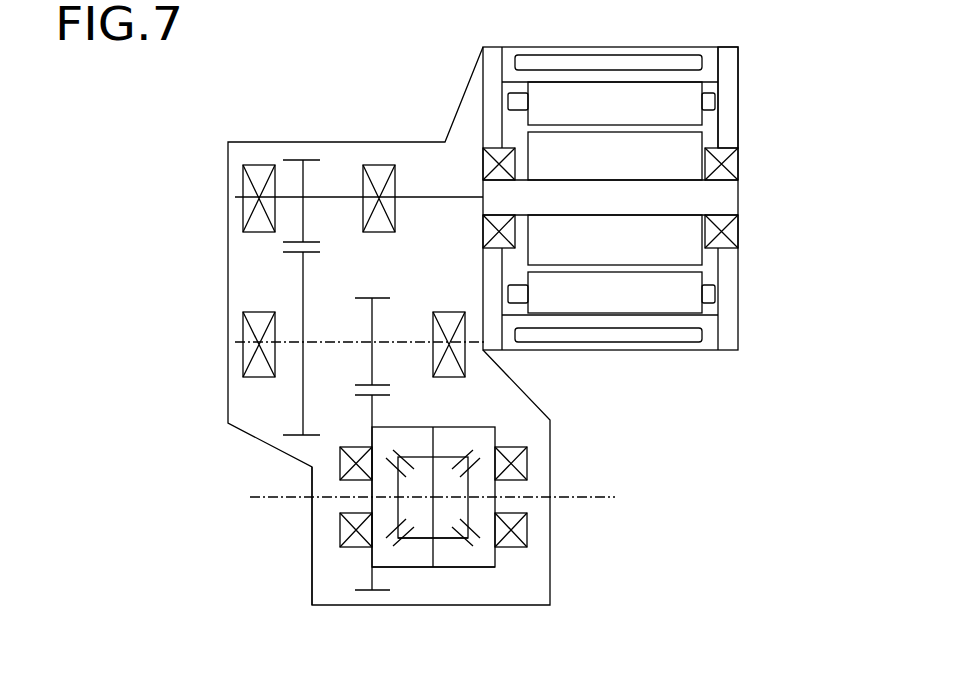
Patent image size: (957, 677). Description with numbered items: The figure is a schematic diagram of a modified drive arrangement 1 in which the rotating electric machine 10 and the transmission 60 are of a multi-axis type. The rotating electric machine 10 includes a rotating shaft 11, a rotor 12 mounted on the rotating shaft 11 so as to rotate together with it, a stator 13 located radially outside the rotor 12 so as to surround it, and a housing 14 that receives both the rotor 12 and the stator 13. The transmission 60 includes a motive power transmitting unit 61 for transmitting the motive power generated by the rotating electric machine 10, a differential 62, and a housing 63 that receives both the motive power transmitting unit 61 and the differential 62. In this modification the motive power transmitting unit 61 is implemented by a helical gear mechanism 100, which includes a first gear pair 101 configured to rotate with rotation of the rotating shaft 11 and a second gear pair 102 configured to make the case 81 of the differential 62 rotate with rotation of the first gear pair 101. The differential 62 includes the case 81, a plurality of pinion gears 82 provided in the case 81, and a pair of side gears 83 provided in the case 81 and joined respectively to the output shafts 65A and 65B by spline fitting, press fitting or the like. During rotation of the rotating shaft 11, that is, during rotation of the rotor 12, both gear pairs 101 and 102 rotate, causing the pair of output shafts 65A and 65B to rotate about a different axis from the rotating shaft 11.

The vehicle drive device 1 is at (654, 213).
The rotating electric machine 10 is at (610, 215).
The rotating shaft 11 is at (680, 215).
The rotor 12 is at (610, 272).
The stator 13 is at (565, 315).
The housing 14 is at (693, 45).
The transmission 60 is at (227, 397).
The motive power transmitting unit 61 is at (265, 160).
The helical gear mechanism 100 is at (330, 167).
The first gear pair 101 is at (303, 178).
The second gear pair 102 is at (372, 318).
The differential 62 is at (468, 534).
The housing 63 is at (312, 582).
The output shaft 65A is at (593, 497).
The output shaft 65B is at (267, 500).
The case 81 is at (473, 567).
The pinion gears 82 is at (418, 538).
The side gears 83 is at (467, 518).